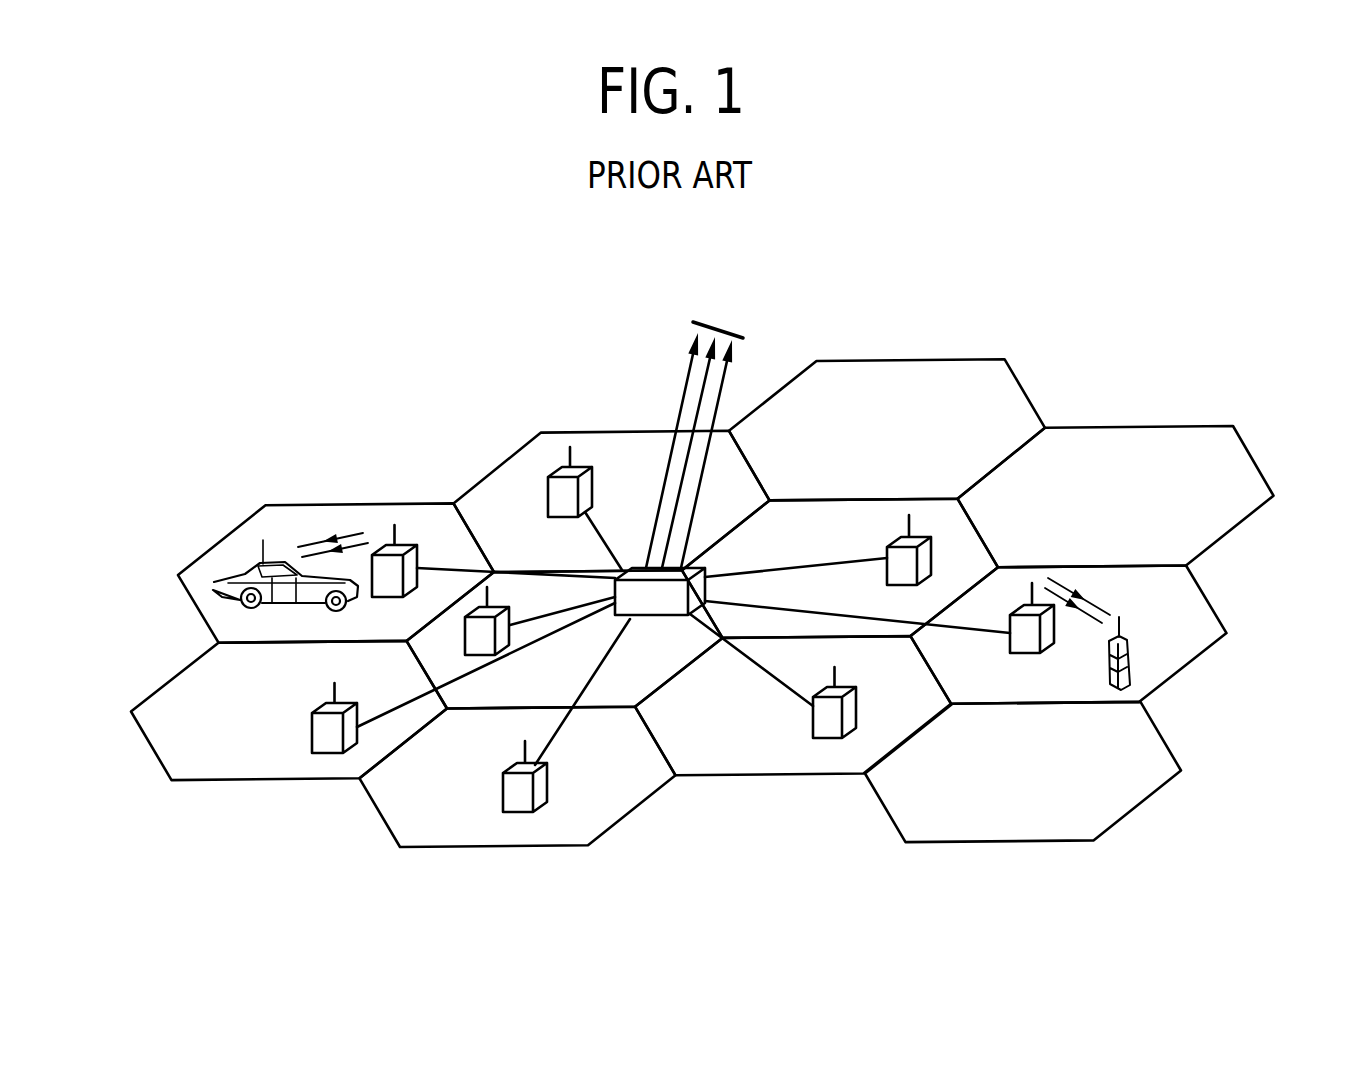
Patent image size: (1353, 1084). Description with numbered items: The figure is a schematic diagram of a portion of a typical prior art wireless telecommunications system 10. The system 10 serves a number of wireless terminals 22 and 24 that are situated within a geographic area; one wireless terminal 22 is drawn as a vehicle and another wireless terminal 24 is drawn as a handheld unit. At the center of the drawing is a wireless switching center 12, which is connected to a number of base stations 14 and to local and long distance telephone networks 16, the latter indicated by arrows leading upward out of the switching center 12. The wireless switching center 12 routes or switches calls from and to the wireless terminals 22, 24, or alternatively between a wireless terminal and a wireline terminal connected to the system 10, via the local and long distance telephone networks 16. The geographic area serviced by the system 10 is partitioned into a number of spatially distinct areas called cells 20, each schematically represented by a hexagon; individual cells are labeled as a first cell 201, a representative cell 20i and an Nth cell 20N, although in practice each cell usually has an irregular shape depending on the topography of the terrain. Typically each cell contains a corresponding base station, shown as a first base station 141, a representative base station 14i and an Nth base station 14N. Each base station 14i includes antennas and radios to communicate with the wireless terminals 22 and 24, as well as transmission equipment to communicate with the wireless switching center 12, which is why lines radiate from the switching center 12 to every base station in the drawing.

The wireless telecommunications system 10 is at (245, 428).
The wireless switching center 12 is at (646, 618).
The base stations 14 is at (648, 632).
The base station 14i is at (312, 725).
The base station 141 is at (503, 790).
The base station 14N is at (855, 697).
The local and long distance telephone networks 16 is at (722, 323).
The cells 20 is at (702, 620).
The cell 20i is at (234, 768).
The cell 201 is at (607, 818).
The cell 20N is at (732, 757).
The wireless terminal 22 is at (246, 567).
The wireless terminal 24 is at (1128, 650).